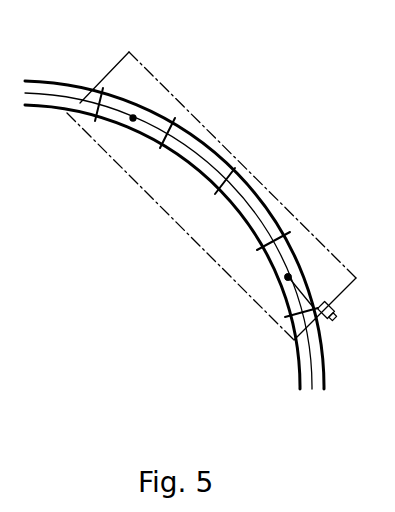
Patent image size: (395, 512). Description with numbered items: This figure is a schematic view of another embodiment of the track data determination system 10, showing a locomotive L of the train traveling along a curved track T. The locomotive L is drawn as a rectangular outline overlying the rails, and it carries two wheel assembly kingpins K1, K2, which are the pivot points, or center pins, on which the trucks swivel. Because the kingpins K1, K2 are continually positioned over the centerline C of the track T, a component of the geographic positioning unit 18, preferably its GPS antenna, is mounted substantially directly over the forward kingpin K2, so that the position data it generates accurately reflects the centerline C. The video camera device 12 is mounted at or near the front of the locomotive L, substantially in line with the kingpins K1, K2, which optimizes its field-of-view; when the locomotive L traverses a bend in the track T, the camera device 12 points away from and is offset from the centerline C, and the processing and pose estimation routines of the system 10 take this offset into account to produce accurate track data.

The track data determination system 10 is at (183, 211).
The video camera device 12 is at (306, 325).
The geographic positioning unit 18 is at (287, 259).
The track T is at (53, 84).
The locomotive L is at (170, 93).
The centerline C is at (52, 115).
The wheel assembly kingpin K1 is at (130, 134).
The wheel assembly kingpin K2 is at (273, 275).